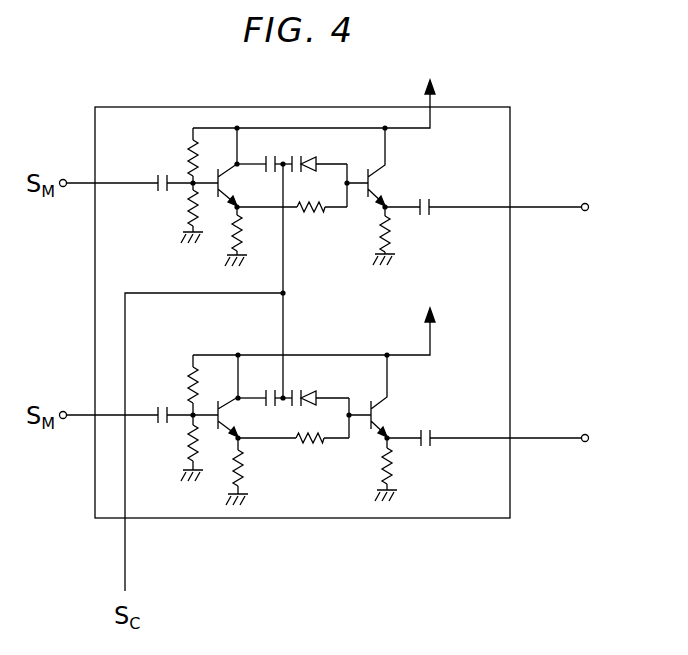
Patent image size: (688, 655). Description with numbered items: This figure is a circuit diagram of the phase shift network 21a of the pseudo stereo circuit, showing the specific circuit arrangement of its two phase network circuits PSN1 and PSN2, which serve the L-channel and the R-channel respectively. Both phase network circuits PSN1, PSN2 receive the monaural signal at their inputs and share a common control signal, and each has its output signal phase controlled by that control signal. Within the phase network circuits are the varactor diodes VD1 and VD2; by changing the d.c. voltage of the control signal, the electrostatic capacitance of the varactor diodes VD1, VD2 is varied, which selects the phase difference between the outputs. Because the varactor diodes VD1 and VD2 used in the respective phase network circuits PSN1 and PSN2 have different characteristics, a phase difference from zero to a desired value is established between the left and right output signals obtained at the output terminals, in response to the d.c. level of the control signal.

The phase shift network 21a is at (470, 107).
The phase network circuit PSN1 is at (359, 161).
The phase network circuit PSN2 is at (360, 393).
The varactor diode VD1 is at (329, 153).
The varactor diode VD2 is at (311, 388).